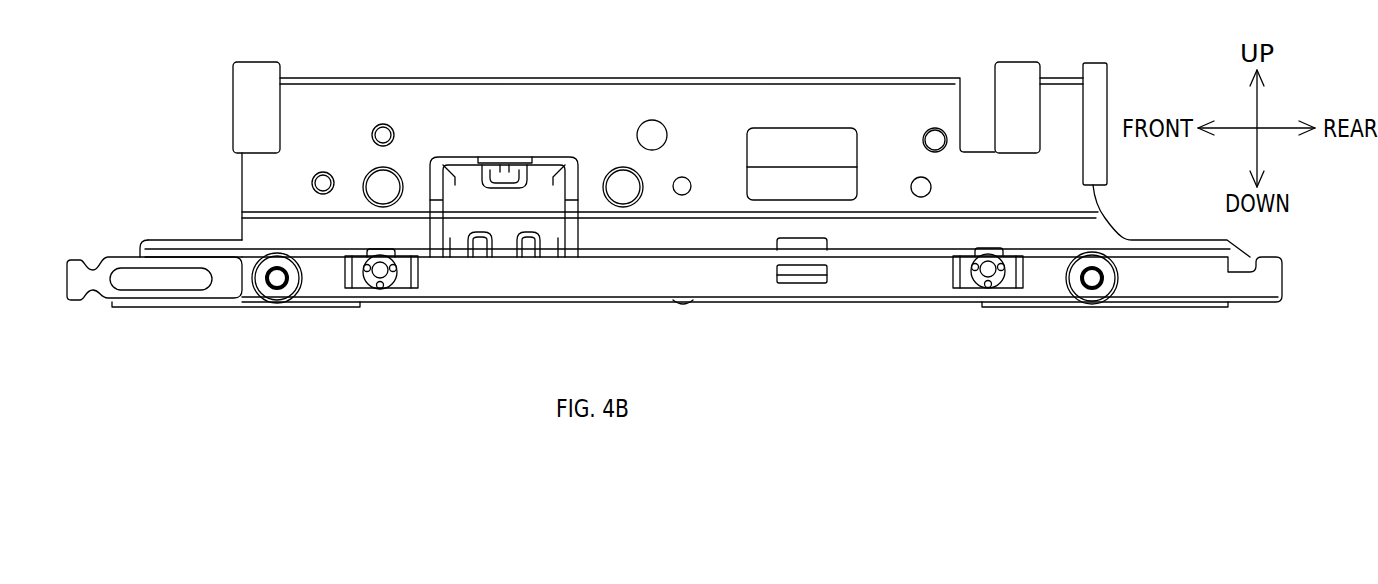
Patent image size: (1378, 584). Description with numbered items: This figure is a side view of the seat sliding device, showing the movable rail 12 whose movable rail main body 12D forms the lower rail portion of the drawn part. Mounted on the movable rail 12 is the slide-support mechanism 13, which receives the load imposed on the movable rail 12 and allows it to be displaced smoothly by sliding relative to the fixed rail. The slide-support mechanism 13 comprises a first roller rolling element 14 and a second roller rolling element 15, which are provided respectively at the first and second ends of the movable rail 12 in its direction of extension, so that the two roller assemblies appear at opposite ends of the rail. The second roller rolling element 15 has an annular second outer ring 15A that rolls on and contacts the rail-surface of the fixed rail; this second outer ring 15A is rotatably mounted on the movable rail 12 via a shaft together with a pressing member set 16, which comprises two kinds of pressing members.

The movable rail 12 is at (802, 72).
The movable rail main body 12D is at (638, 290).
The slide-support mechanism 13 is at (685, 335).
The first roller rolling element 14 is at (282, 300).
The second roller rolling element 15 is at (405, 281).
The second outer ring 15A is at (685, 299).
The pressing member set 16 is at (367, 289).